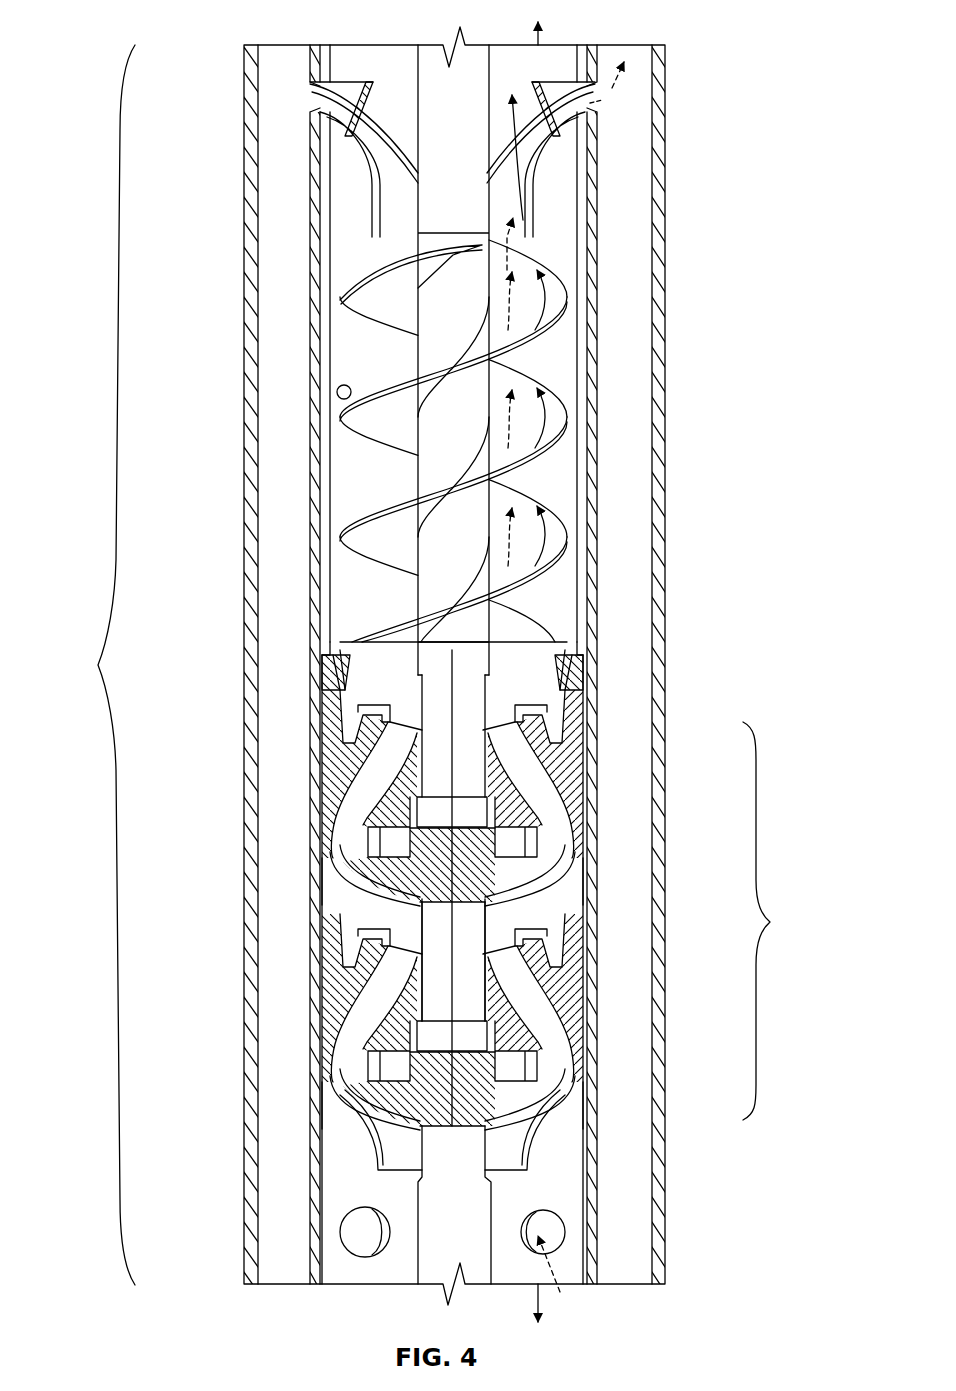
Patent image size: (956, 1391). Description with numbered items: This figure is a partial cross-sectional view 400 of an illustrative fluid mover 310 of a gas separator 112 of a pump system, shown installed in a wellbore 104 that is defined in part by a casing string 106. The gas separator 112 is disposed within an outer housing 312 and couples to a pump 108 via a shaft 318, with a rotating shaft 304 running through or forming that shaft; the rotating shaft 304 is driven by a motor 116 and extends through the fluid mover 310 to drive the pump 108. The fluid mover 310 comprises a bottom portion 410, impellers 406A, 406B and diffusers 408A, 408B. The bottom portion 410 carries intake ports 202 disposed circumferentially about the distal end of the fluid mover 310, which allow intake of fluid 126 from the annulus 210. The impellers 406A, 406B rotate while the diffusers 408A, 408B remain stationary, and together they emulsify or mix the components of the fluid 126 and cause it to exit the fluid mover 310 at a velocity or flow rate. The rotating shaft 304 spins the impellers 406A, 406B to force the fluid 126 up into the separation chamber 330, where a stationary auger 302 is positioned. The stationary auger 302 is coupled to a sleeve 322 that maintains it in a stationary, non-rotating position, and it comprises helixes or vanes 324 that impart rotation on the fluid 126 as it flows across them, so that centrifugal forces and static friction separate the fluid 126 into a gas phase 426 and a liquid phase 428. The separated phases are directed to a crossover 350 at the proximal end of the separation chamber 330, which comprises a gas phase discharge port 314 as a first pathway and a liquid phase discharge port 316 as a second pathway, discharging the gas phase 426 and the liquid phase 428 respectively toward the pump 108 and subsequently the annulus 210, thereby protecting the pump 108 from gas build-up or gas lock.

The partial cross-sectional view 400 is at (223, 22).
The wellbore 104 is at (660, 298).
The casing string 106 is at (660, 258).
The pump 108 is at (548, 32).
The gas separator 112 is at (95, 665).
The motor 116 is at (546, 1314).
The fluid 126 is at (597, 1286).
The intake ports 202 is at (543, 1215).
The annulus 210 is at (636, 582).
The stationary auger 302 is at (578, 470).
The rotating shaft 304 is at (348, 715).
The fluid mover 310 is at (490, 969).
The outer housing 312 is at (590, 722).
The gas phase discharge port 314 is at (330, 104).
The liquid phase discharge port 316 is at (355, 222).
The shaft 318 is at (405, 68).
The sleeve 322 is at (552, 458).
The helixes or vanes 324 is at (555, 410).
The separation chamber 330 is at (337, 392).
The crossover 350 is at (417, 185).
The impeller 406A is at (372, 1110).
The impeller 406B is at (372, 905).
The diffuser 408A is at (372, 995).
The diffuser 408B is at (372, 775).
The bottom portion 410 is at (340, 1195).
The gas phase 426 is at (605, 100).
The liquid phase 428 is at (600, 92).